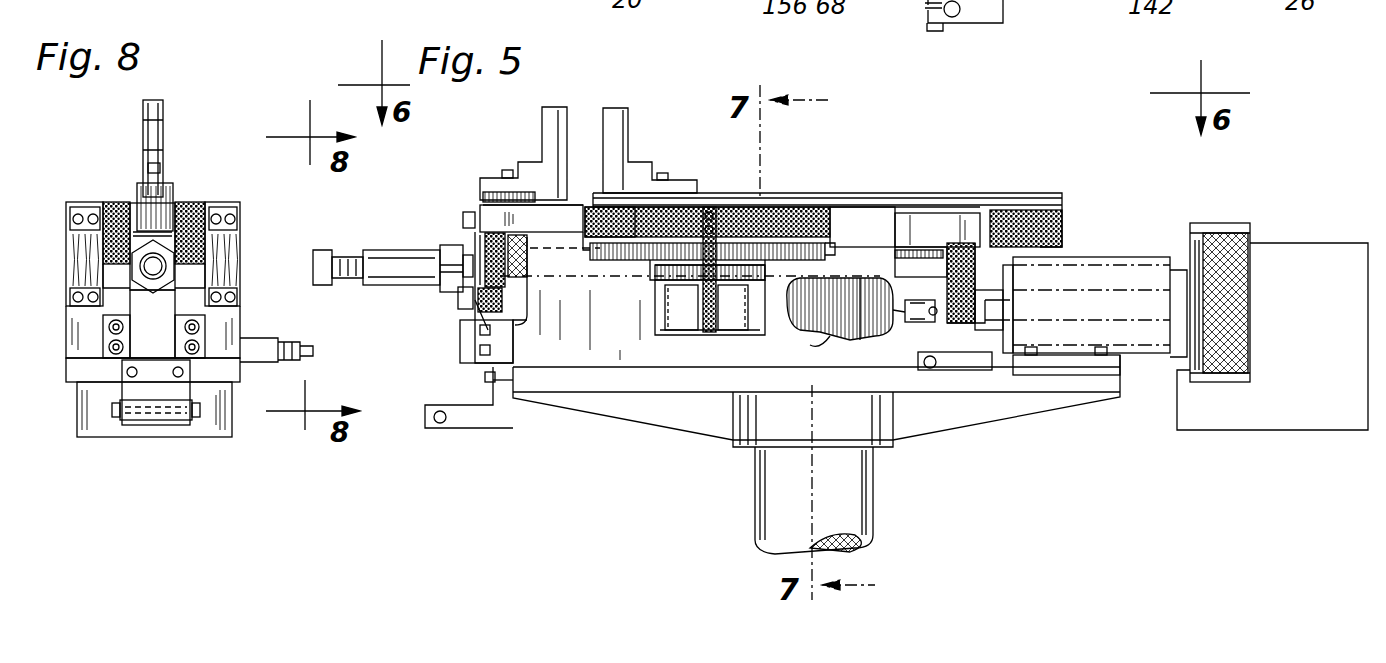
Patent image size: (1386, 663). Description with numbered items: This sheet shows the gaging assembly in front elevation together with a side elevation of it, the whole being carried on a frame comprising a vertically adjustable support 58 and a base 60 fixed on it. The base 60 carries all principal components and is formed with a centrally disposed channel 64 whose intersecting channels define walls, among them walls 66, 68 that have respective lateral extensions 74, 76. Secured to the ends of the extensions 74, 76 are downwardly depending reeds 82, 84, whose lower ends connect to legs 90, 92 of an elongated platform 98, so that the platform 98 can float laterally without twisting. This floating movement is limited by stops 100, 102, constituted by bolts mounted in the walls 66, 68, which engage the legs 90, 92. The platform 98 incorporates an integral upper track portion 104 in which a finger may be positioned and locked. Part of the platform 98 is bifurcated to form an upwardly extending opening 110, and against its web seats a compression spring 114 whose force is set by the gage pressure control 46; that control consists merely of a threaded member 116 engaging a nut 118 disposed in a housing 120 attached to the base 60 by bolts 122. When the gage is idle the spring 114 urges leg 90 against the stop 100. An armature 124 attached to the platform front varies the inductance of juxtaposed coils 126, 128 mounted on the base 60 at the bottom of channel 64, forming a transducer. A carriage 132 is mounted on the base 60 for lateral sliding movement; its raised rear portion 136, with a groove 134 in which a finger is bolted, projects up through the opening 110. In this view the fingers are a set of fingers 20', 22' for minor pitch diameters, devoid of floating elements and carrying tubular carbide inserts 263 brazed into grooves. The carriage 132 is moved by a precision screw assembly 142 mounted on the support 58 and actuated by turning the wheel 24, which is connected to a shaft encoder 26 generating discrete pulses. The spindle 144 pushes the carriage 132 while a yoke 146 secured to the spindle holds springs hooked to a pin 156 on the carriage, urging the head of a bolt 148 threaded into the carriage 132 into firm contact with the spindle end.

In FIG. 8, the gaging finger 20' is at (204, 117).
In FIG. 5, the gaging finger 20' is at (522, 154).
In FIG. 5, the gaging finger 22' is at (654, 140).
In FIG. 5, the wheel 24 is at (1243, 219).
In FIG. 5, the shaft encoder 26 is at (1312, 338).
In FIG. 8, the gage pressure control 46 is at (165, 265).
In FIG. 5, the gage pressure control 46 is at (350, 265).
In FIG. 5, the vertically adjustable support 58 is at (1090, 395).
In FIG. 5, the base 60 is at (592, 346).
In FIG. 5, the centrally disposed channel 64 is at (685, 322).
In FIG. 5, the wall 66 is at (625, 328).
In FIG. 5, the wall 68 is at (770, 305).
In FIG. 5, the lateral extension 74 is at (503, 222).
In FIG. 5, the lateral extension 76 is at (960, 225).
In FIG. 5, the reed 82 is at (472, 238).
In FIG. 5, the reed 84 is at (1026, 228).
In FIG. 5, the leg 90 is at (480, 320).
In FIG. 5, the leg 92 is at (958, 274).
In FIG. 5, the elongated platform 98 is at (707, 223).
In FIG. 5, the stop 100 is at (526, 230).
In FIG. 5, the stop 102 is at (913, 252).
In FIG. 5, the upper track portion 104 is at (1025, 205).
In FIG. 8, the opening 110 is at (160, 212).
In FIG. 5, the compression spring 114 is at (476, 245).
In FIG. 5, the threaded member 116 is at (352, 262).
In FIG. 8, the nut 118 is at (180, 238).
In FIG. 5, the nut 118 is at (452, 270).
In FIG. 8, the housing 120 is at (160, 332).
In FIG. 5, the housing 120 is at (478, 338).
In FIG. 8, the bolts 122 is at (205, 327).
In FIG. 5, the bolts 122 is at (483, 358).
In FIG. 5, the armature 124 is at (700, 250).
In FIG. 5, the coil 126 is at (680, 300).
In FIG. 5, the coil 128 is at (735, 312).
In FIG. 5, the carriage 132 is at (870, 188).
In FIG. 8, the groove 134 is at (153, 188).
In FIG. 8, the raised rear portion 136 is at (143, 205).
In FIG. 5, the raised rear portion 136 is at (500, 198).
In FIG. 5, the precision screw assembly 142 is at (1123, 258).
In FIG. 5, the spindle 144 is at (992, 330).
In FIG. 5, the yoke 146 is at (946, 368).
In FIG. 5, the bolt 148 is at (912, 325).
In FIG. 5, the pin 156 is at (870, 312).
In FIG. 8, the tubular carbide insert 263 is at (158, 100).
In FIG. 5, the tubular carbide insert 263 is at (542, 112).